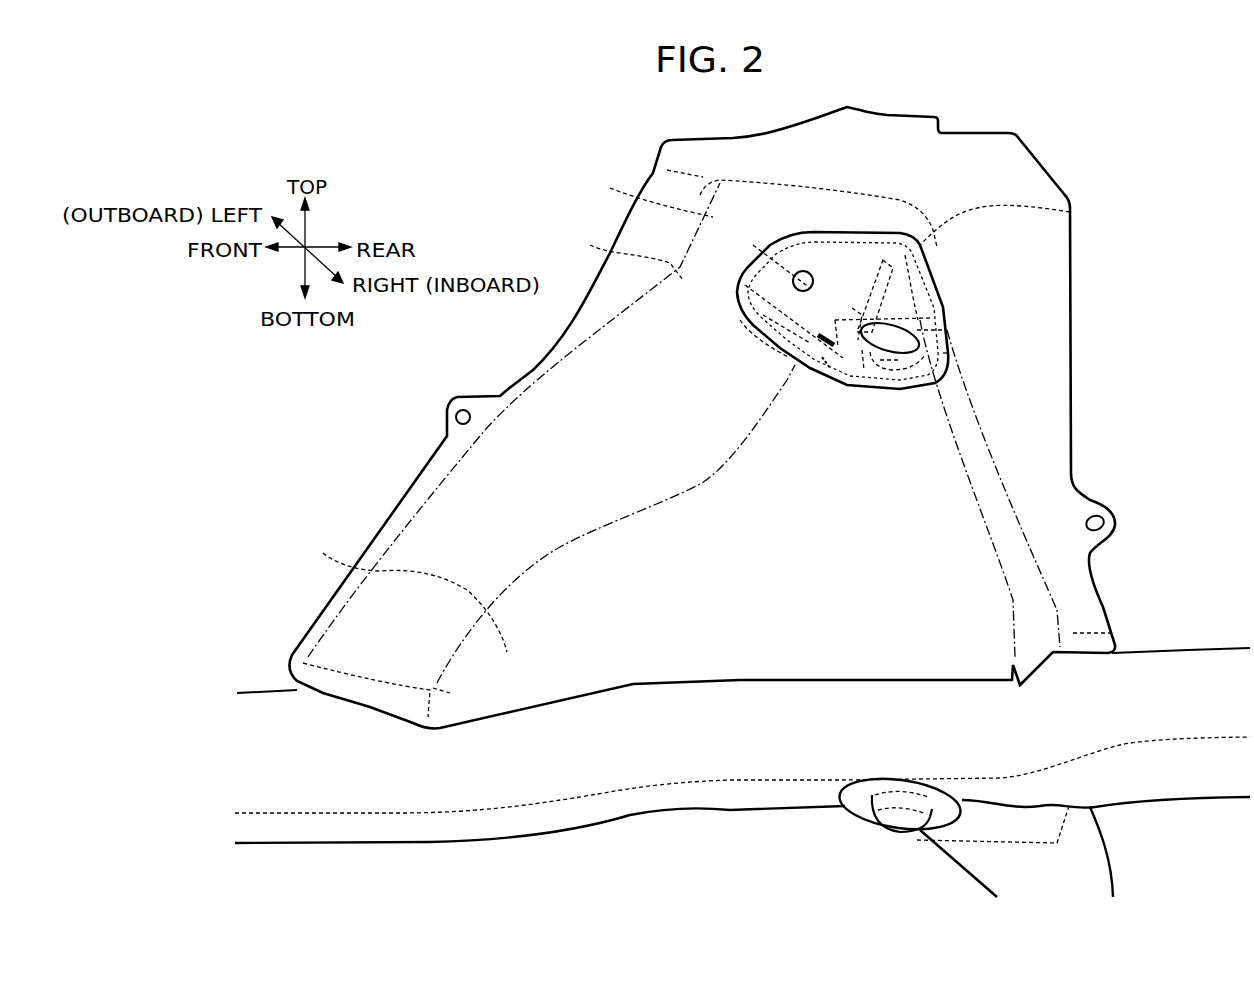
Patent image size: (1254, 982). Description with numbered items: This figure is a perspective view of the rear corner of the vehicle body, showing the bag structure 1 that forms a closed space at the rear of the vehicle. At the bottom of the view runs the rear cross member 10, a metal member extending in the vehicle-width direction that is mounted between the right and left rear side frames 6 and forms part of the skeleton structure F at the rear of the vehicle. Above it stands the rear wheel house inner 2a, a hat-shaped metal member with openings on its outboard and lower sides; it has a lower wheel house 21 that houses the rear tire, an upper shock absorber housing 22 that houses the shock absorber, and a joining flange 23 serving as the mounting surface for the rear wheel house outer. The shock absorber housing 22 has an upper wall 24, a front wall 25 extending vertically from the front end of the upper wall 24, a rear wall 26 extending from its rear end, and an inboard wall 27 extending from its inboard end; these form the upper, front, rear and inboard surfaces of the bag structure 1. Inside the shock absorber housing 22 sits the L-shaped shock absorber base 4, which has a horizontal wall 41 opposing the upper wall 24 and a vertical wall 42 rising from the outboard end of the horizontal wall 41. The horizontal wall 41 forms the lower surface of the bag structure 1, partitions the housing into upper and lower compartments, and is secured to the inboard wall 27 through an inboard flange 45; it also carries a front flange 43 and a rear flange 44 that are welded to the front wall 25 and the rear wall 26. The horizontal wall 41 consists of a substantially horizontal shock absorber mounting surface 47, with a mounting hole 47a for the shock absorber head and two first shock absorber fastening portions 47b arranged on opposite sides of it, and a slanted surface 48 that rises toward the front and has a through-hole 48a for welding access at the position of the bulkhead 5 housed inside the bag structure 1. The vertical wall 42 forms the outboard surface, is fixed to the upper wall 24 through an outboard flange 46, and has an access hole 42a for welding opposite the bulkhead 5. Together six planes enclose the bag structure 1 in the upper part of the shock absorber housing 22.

The bag structure 1 is at (772, 228).
The rear wheel house inner 2a is at (1032, 153).
The shock absorber base 4 is at (1070, 212).
The bulkhead 5 is at (920, 278).
The rear side frame 6 is at (633, 803).
The rear cross member 10 is at (978, 850).
The skeleton structure F is at (916, 834).
The lower wheel house 21 is at (330, 557).
The shock absorber housing 22 is at (612, 189).
The joining flange 23 is at (500, 403).
The upper wall 24 is at (800, 202).
The front wall 25 is at (595, 248).
The rear wall 26 is at (963, 385).
The inboard wall 27 is at (910, 313).
The horizontal wall 41 is at (857, 350).
The vertical wall 42 is at (813, 262).
The access hole 42a is at (753, 245).
The front flange 43 is at (763, 312).
The rear flange 44 is at (943, 353).
The inboard flange 45 is at (913, 373).
The outboard flange 46 is at (850, 260).
The shock absorber mounting surface 47 is at (880, 360).
The mounting hole 47a is at (903, 373).
The first shock absorber fastening portion 47b is at (920, 330).
The slanted surface 48 is at (775, 342).
The through-hole 48a is at (800, 355).